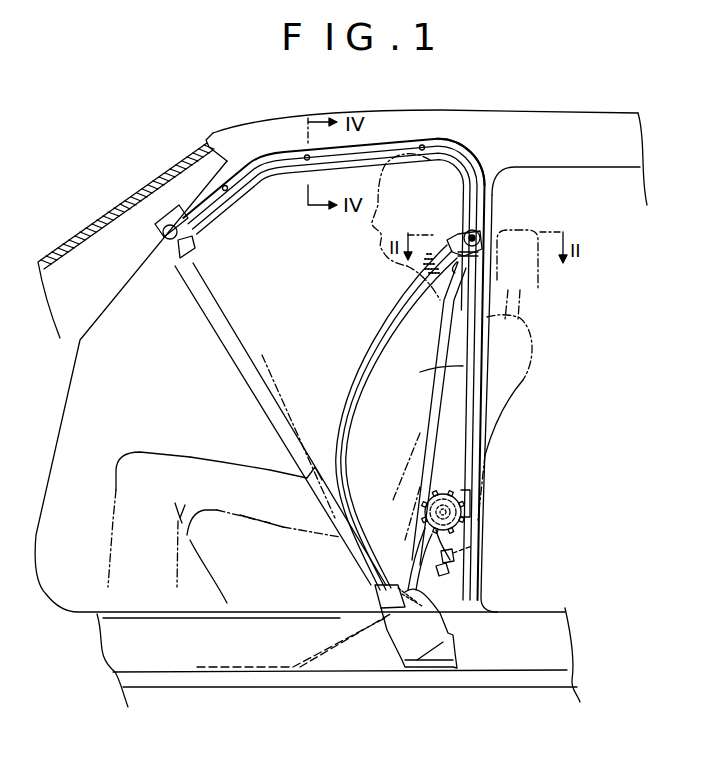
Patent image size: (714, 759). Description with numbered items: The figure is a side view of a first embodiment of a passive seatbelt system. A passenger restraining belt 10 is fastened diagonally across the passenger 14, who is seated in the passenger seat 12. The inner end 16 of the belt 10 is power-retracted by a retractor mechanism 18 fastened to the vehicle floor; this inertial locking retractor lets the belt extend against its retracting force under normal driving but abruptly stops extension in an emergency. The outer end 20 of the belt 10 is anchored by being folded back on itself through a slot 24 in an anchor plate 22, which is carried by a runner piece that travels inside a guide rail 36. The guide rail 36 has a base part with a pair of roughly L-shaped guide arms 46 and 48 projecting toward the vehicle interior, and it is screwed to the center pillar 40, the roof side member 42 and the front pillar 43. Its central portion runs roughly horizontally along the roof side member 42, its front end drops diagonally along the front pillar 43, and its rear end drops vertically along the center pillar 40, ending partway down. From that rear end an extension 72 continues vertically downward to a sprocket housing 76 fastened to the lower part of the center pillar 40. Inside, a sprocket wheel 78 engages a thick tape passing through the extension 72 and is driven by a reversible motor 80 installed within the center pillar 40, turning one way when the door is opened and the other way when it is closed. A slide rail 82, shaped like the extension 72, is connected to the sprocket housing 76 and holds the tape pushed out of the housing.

The passenger restraining belt 10 is at (247, 352).
The passenger seat 12 is at (520, 380).
The passenger 14 is at (373, 350).
The inner end of the belt 16 is at (371, 572).
The retractor mechanism 18 is at (455, 633).
The outer end of the belt 20 is at (187, 258).
The anchor plate 22 is at (458, 232).
The slot 24 is at (455, 273).
The guide rail 36 is at (462, 144).
The center pillar 40 is at (494, 203).
The roof side member 42 is at (425, 170).
The front pillar 43 is at (141, 270).
The guide arm 46 is at (476, 166).
The guide arm 48 is at (461, 188).
The extension 72 is at (428, 376).
The sprocket housing 76 is at (460, 492).
The sprocket wheel 78 is at (470, 505).
The reversible motor 80 is at (464, 542).
The slide rail 82 is at (433, 581).